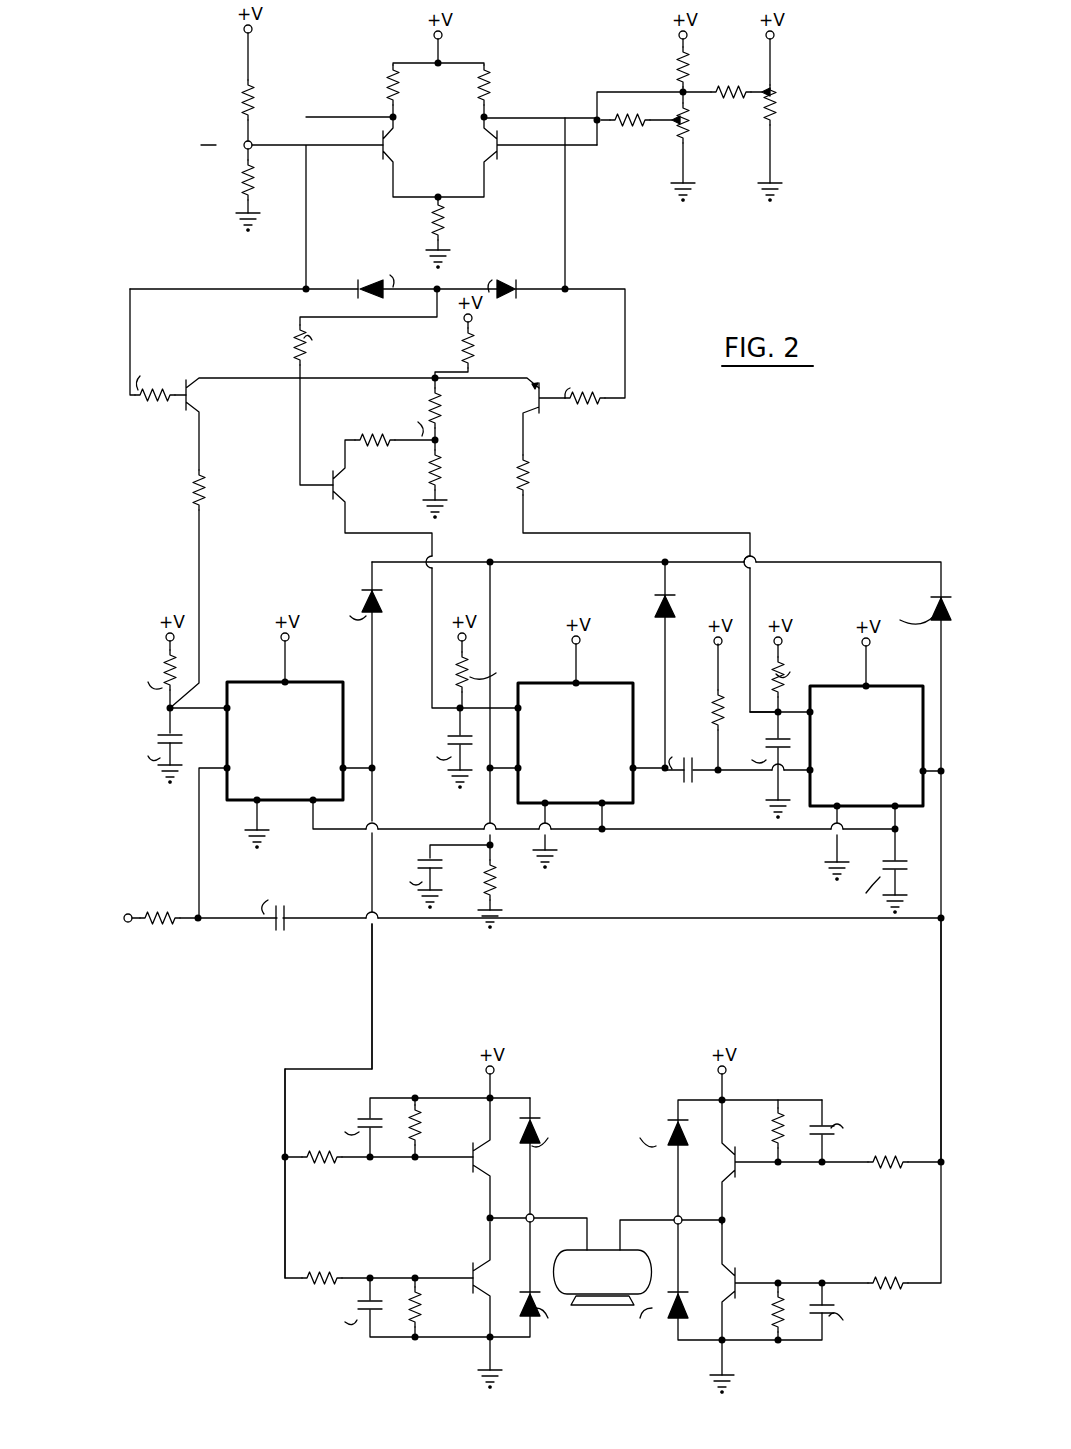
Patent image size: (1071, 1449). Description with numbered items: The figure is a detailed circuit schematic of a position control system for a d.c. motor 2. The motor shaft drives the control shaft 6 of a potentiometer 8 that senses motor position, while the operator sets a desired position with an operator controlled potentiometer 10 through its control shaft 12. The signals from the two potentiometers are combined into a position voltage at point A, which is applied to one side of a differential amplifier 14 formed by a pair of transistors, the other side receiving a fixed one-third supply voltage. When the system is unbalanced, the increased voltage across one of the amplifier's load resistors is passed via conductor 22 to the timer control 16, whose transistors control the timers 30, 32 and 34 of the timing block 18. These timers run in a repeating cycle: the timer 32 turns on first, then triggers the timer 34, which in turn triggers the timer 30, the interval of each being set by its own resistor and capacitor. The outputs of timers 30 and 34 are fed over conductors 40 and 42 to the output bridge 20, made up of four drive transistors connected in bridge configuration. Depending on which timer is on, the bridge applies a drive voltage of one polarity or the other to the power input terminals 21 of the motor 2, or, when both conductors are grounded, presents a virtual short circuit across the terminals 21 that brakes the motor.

The d.c. motor 2 is at (636, 1250).
The control shaft of potentiometer 6 is at (660, 125).
The potentiometer 8 is at (689, 127).
The operator controlled potentiometer 10 is at (790, 97).
The control shaft 12 is at (765, 91).
The differential amplifier 14 is at (80, 23).
The timer control 16 is at (80, 270).
The timing block 18 is at (80, 545).
The output bridge 20 is at (80, 1040).
The power input terminals 21 is at (676, 1218).
The conductor 22 is at (130, 330).
The timer 30 is at (292, 683).
The timer 32 is at (588, 683).
The timer 34 is at (883, 683).
The conductor 40 is at (374, 948).
The conductor 42 is at (938, 1010).